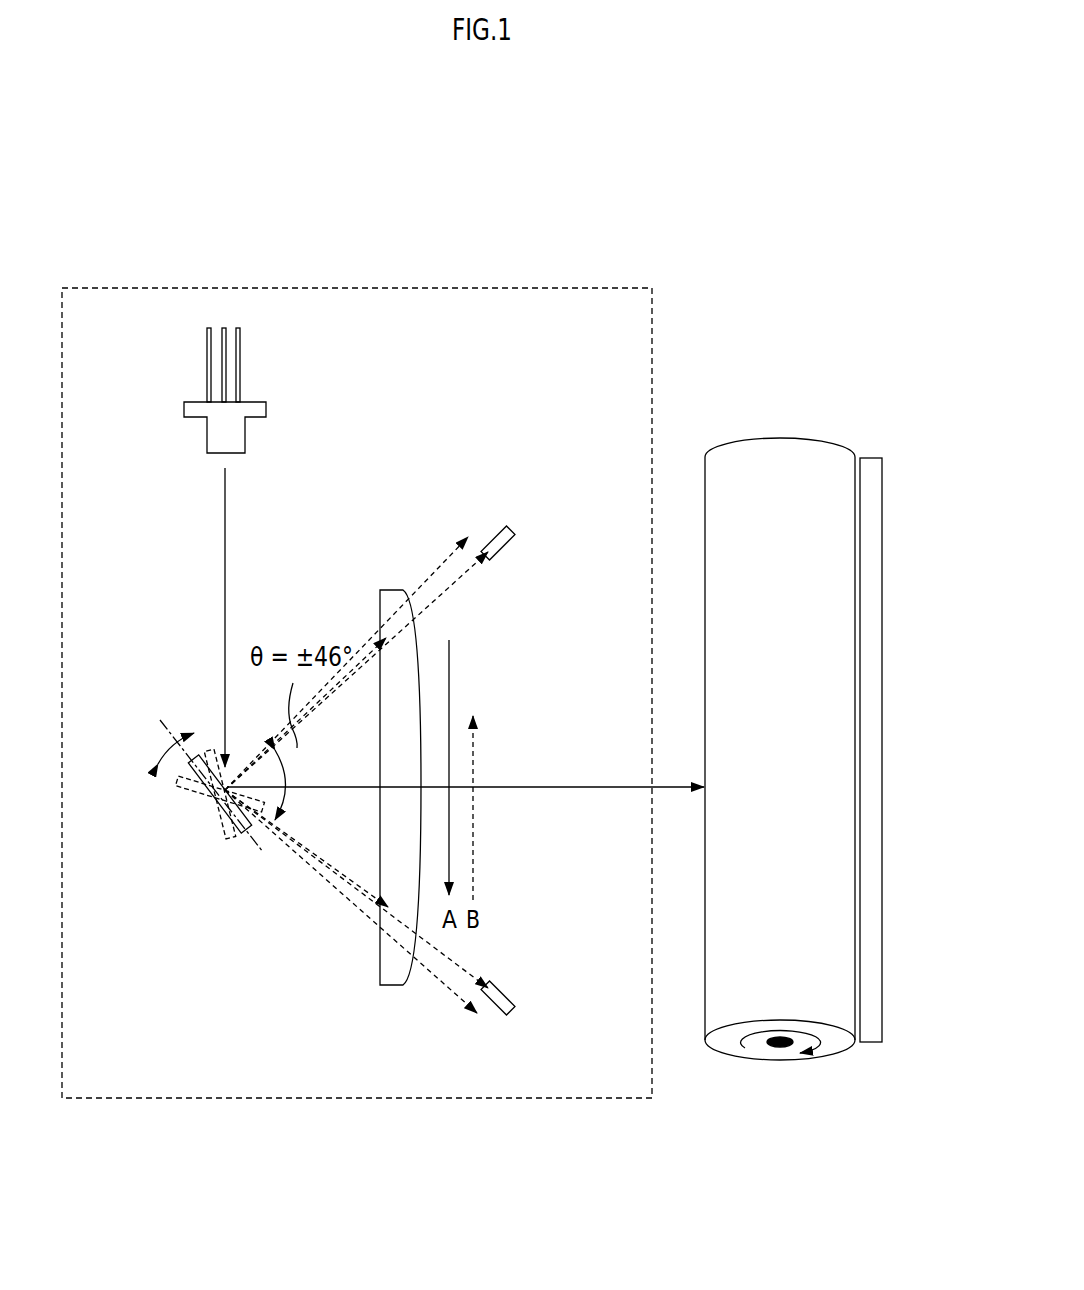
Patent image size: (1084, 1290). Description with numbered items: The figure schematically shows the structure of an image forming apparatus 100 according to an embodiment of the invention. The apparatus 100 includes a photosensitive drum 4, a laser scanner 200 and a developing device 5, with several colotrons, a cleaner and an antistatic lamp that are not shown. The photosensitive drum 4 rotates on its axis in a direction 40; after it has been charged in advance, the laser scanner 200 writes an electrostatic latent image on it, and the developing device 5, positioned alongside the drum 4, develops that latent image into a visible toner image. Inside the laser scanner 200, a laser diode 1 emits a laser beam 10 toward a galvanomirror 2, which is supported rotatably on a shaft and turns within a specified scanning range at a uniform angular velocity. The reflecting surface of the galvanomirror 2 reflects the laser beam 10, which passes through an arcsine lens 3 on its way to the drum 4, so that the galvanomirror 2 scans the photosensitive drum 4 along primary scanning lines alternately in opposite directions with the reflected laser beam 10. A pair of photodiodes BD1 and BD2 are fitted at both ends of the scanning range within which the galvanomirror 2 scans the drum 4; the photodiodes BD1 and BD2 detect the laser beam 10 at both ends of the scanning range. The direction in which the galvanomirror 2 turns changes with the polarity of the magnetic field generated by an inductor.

The image forming apparatus 100 is at (560, 262).
The laser scanner 200 is at (452, 1098).
The laser diode 1 is at (266, 405).
The laser beam 10 is at (228, 490).
The galvanomirror 2 is at (243, 836).
The arcsine lens 3 is at (380, 590).
The photosensitive drum 4 is at (783, 438).
The rotation direction of the photosensitive drum 40 is at (762, 1051).
The developing device 5 is at (883, 558).
The photodiode BD1 is at (508, 530).
The photodiode BD2 is at (506, 1006).